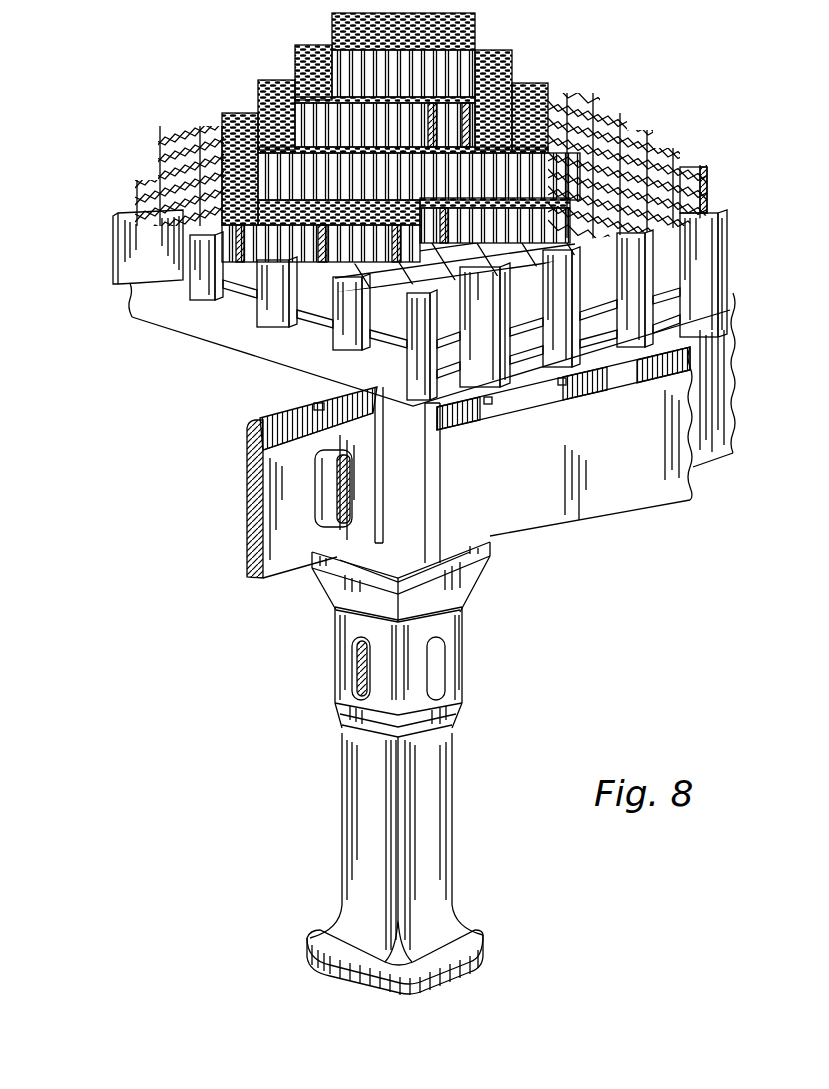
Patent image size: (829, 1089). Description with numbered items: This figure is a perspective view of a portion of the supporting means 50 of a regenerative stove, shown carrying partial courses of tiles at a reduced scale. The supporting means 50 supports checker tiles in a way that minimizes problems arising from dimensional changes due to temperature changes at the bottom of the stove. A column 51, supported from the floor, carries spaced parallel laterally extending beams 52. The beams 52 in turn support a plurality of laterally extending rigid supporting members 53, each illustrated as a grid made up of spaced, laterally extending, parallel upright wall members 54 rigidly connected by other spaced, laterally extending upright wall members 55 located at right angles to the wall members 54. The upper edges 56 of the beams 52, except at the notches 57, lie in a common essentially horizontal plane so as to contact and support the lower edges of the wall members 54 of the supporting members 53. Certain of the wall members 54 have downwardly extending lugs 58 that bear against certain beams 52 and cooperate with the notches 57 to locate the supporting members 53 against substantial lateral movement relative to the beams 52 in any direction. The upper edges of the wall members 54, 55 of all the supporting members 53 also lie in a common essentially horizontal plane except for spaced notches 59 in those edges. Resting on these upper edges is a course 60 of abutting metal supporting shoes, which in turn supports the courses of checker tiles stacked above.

The supporting means 50 is at (200, 423).
The column 51 is at (343, 798).
The beam 52 is at (252, 523).
The rigid supporting member 53 is at (102, 240).
The upright wall member 54 is at (722, 272).
The upright wall member 55 is at (532, 315).
The upper edge 56 is at (313, 406).
The notch 57 is at (323, 408).
The downwardly extending lug 58 is at (392, 443).
The notch 59 is at (705, 222).
The course 60 is at (222, 115).